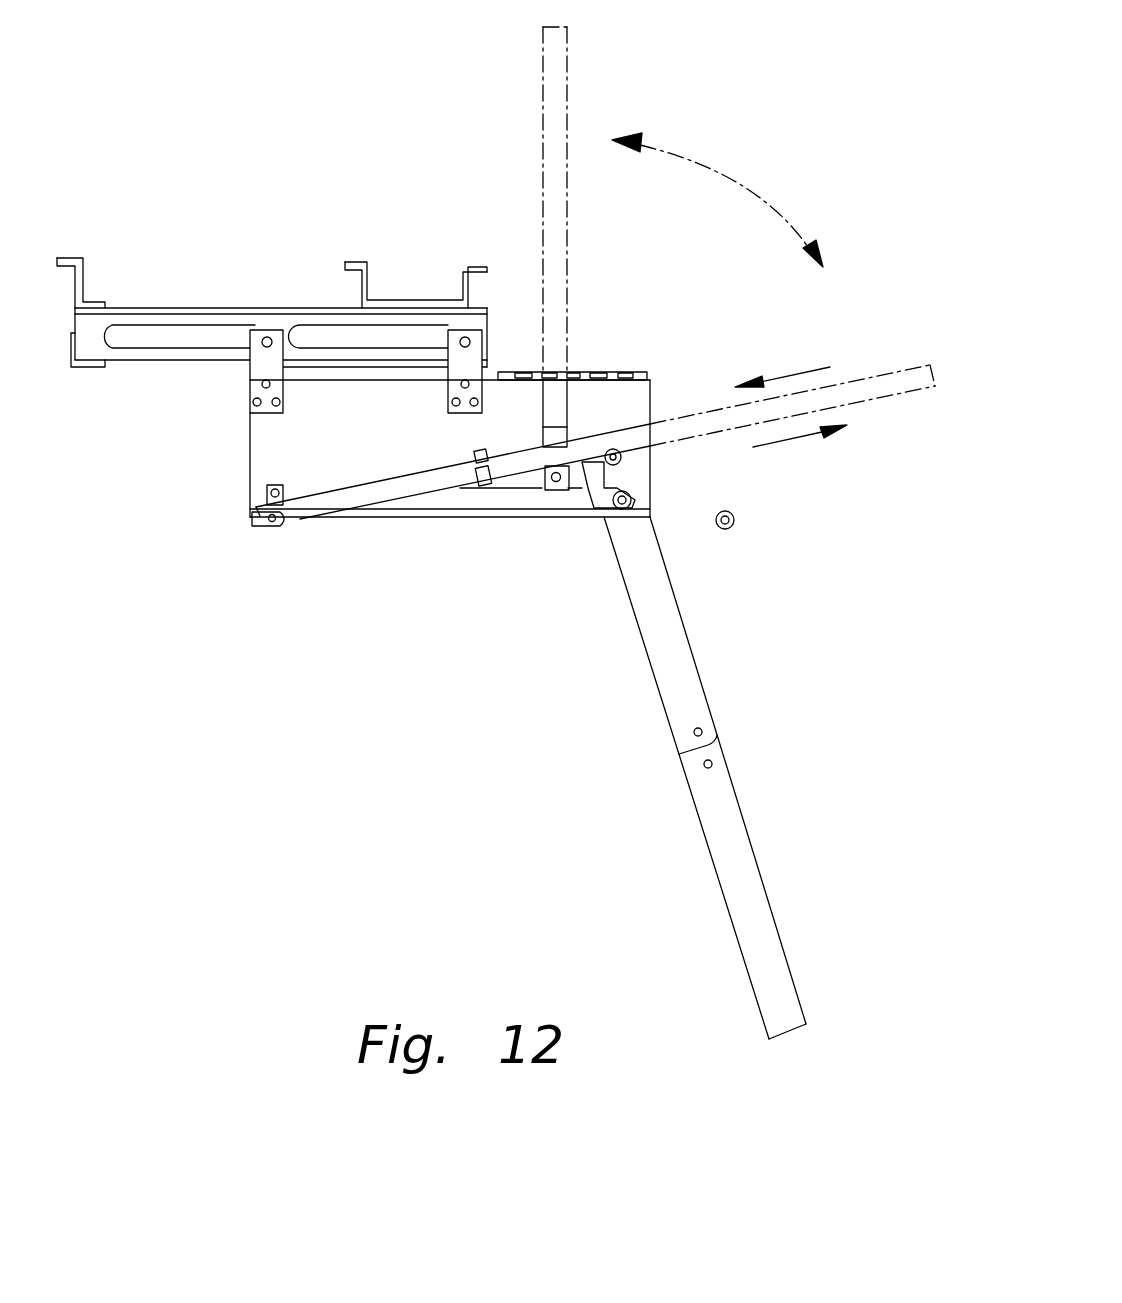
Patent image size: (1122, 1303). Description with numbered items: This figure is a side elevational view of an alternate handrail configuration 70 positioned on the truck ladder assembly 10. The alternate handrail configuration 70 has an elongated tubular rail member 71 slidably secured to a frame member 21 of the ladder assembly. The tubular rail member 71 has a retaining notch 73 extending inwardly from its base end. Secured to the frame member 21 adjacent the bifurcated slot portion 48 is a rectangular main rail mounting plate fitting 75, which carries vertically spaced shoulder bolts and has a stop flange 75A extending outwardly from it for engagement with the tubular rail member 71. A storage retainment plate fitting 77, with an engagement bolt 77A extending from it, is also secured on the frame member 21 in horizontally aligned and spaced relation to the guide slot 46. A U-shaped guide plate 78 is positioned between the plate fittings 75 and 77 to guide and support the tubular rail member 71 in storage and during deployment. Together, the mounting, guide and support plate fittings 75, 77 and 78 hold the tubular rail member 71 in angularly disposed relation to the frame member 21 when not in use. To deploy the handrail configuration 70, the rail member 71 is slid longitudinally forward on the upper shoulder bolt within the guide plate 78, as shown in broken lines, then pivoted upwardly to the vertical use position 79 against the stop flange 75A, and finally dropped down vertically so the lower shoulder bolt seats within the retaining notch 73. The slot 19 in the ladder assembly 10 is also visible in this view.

The truck ladder assembly 10 is at (211, 232).
The slot 19 is at (120, 345).
The frame member 21 is at (268, 428).
The guide slot 46 is at (527, 508).
The bifurcated slot portion 48 is at (597, 465).
The alternate handrail configuration 70 is at (338, 472).
The tubular rail member 71 is at (555, 77).
The retaining notch 73 is at (256, 524).
The main rail mounting plate fitting 75 is at (560, 432).
The stop flange 75A is at (582, 468).
The storage retainment plate fitting 77 is at (266, 497).
The engagement bolt 77A is at (287, 527).
The U-shaped guide plate 78 is at (490, 486).
The vertical use position 79 is at (567, 204).